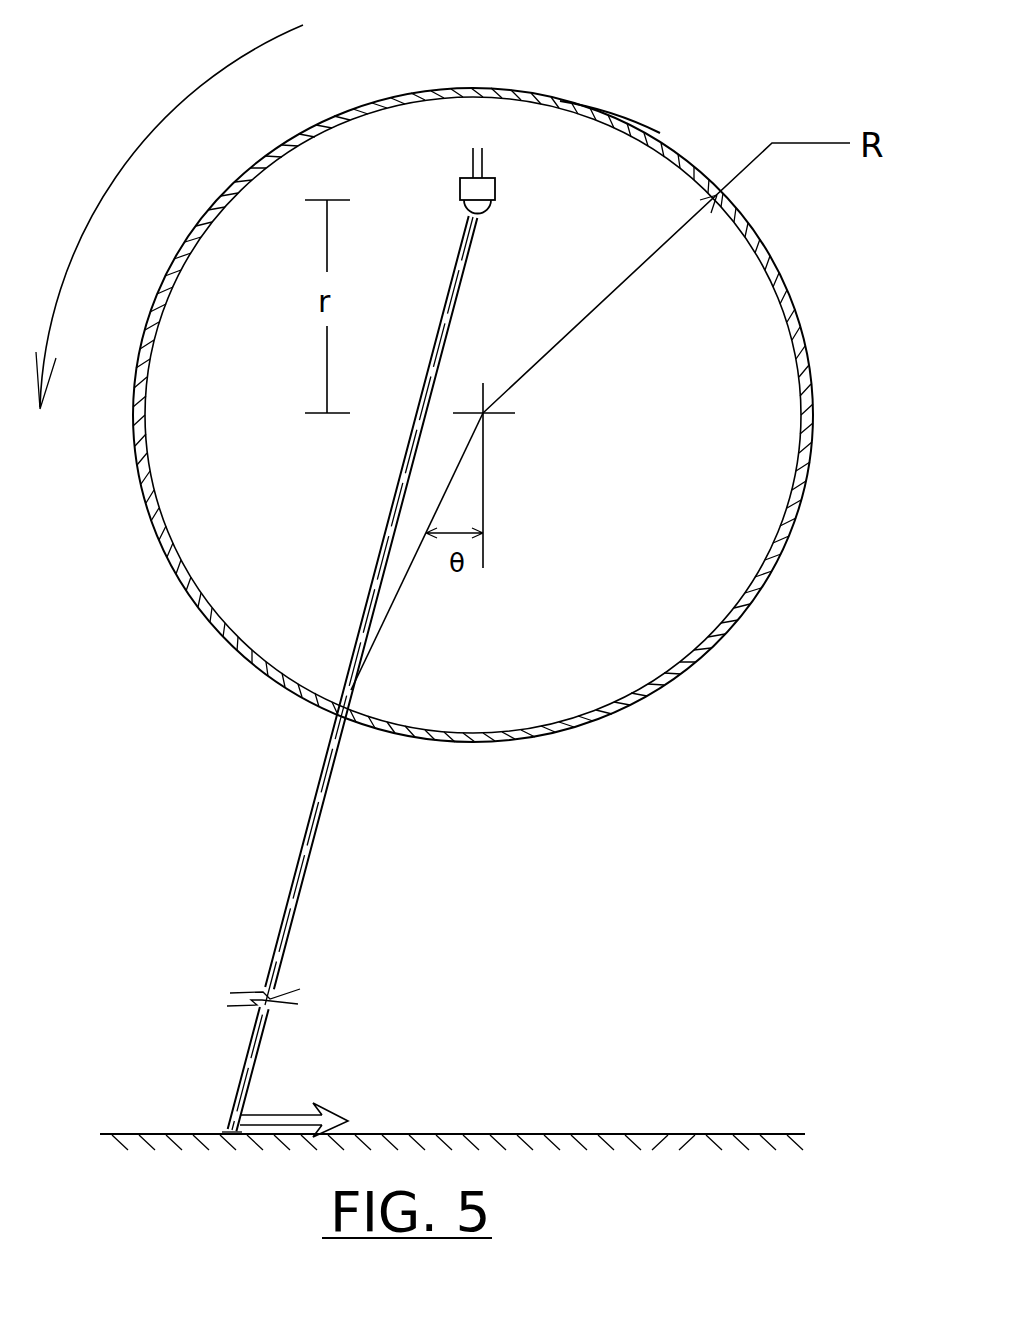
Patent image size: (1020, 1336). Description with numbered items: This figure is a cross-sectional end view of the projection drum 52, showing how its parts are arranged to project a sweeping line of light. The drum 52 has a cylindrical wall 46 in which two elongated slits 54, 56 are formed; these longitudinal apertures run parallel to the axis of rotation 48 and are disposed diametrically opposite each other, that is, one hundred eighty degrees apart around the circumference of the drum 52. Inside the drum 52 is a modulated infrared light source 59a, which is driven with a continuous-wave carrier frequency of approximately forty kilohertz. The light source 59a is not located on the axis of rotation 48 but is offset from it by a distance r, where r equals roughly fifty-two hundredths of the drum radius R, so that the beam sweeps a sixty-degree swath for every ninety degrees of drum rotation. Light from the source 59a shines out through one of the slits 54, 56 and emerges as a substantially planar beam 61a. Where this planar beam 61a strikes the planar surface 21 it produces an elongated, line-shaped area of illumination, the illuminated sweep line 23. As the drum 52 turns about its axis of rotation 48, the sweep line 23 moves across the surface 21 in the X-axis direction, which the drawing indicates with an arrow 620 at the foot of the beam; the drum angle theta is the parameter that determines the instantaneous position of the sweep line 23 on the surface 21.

The planar surface 21 is at (534, 1120).
The illuminated sweep line 23 is at (233, 1116).
The cylindrical wall 46 is at (812, 455).
The axis of rotation 48 is at (486, 417).
The drum 52 is at (437, 60).
The slit 54 is at (331, 732).
The slit 56 is at (610, 117).
The modulated infrared light source 59a is at (518, 181).
The substantially planar beam 61a is at (305, 876).
The direction of force 620 is at (322, 1104).